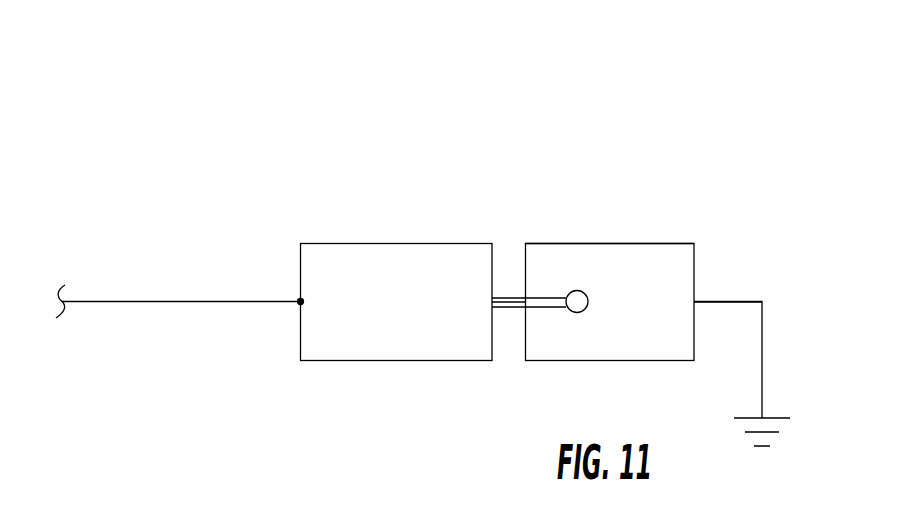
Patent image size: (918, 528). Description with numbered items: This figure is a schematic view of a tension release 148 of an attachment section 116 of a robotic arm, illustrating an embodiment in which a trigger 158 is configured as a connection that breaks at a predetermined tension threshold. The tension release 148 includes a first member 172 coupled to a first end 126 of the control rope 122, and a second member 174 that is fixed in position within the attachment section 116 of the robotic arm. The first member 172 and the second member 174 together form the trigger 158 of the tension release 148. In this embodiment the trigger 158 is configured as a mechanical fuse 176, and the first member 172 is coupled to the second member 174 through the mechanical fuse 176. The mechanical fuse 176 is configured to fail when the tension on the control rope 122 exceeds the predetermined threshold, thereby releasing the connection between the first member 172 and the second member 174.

The attachment section 116 is at (698, 91).
The control rope 122 is at (165, 301).
The first end 126 is at (296, 307).
The tension release 148 is at (502, 129).
The trigger 158 is at (548, 256).
The first member 172 is at (393, 268).
The second member 174 is at (624, 268).
The mechanical fuse 176 is at (517, 336).